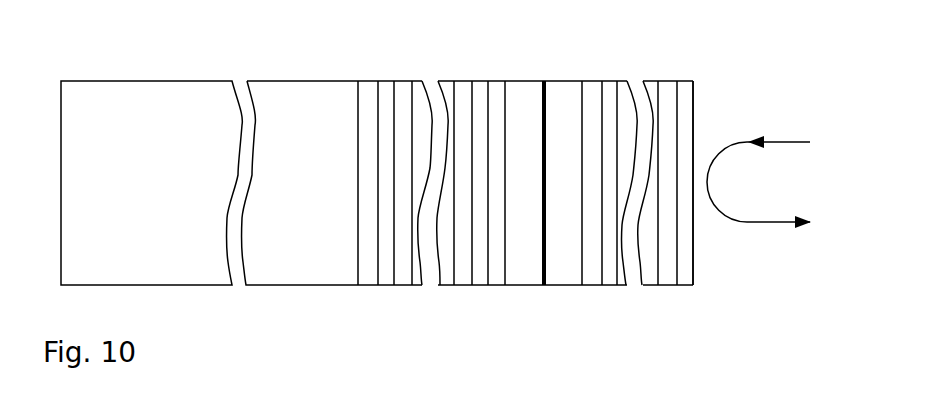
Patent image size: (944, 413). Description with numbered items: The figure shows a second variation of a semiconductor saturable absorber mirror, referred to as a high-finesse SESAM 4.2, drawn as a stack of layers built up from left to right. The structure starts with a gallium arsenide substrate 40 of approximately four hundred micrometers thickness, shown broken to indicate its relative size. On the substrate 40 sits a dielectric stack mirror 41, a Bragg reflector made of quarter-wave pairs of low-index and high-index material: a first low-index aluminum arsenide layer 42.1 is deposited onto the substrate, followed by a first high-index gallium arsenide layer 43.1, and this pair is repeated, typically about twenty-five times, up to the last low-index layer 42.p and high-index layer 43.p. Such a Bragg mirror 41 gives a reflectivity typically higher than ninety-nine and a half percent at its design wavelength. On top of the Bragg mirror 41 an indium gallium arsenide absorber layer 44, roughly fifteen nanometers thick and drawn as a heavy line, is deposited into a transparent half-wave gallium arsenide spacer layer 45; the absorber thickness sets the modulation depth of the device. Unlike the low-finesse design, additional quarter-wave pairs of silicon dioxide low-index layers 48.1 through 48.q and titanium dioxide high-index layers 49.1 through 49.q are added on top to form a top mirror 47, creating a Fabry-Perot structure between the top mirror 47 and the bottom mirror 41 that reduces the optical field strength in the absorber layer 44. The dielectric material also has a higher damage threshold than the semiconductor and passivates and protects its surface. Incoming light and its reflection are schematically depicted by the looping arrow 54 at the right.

The substrate 40 is at (180, 100).
The high-finesse SESAM 4.2 is at (267, 327).
The dielectric stack mirror 41 is at (436, 198).
The quarter wave layer of low-index material 42.1 is at (370, 272).
The high-index layer 43.1 is at (385, 278).
The low-index layer 42.p is at (483, 278).
The high-index layer 43.p is at (497, 278).
The absorber layer 44 is at (541, 101).
The half-wave spacer layer 45 is at (563, 102).
The top mirror 47 is at (659, 198).
The low-index layer 48.1 is at (593, 272).
The high-index layer 49.1 is at (610, 278).
The low-index layer 48.q is at (668, 280).
The high-index layer 49.q is at (685, 280).
The arrow 54 is at (763, 224).